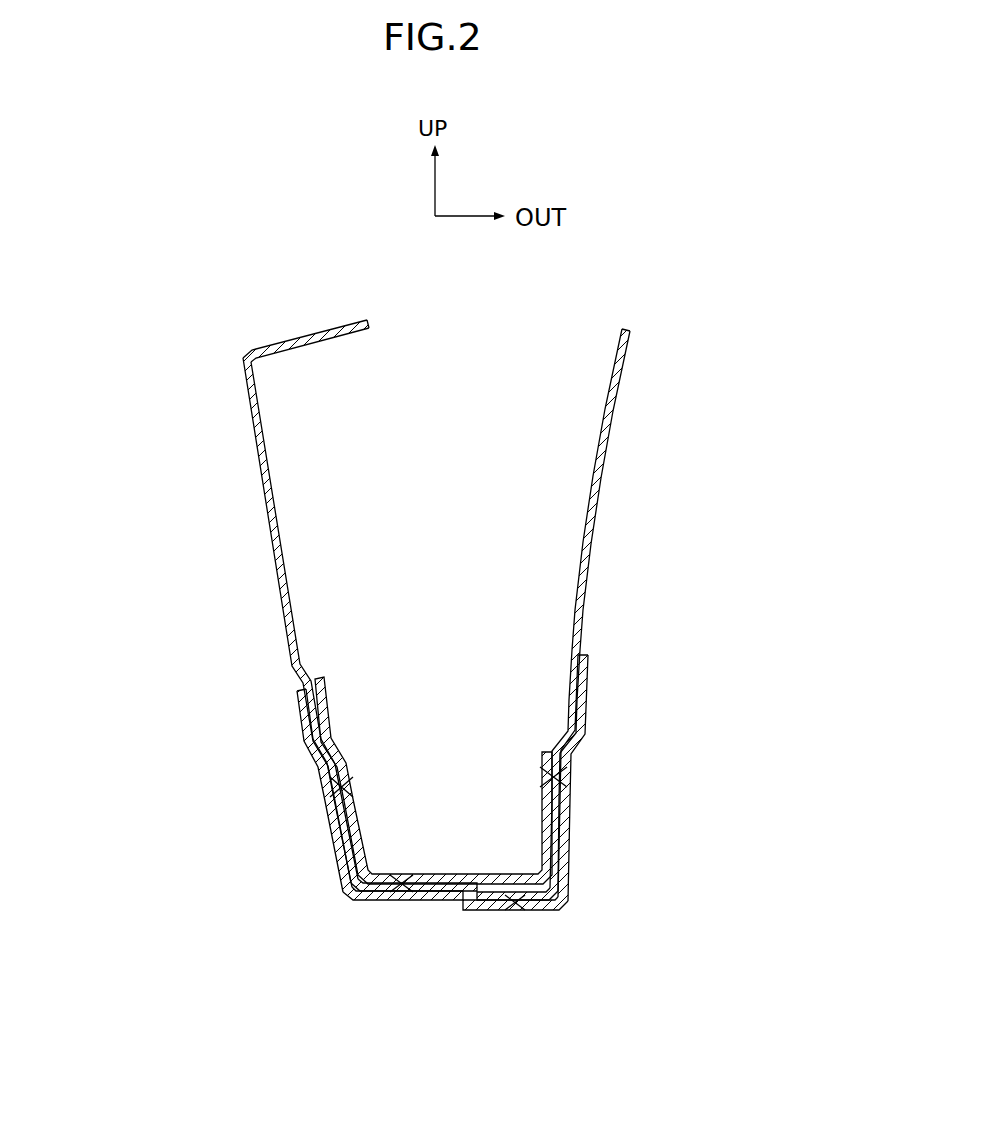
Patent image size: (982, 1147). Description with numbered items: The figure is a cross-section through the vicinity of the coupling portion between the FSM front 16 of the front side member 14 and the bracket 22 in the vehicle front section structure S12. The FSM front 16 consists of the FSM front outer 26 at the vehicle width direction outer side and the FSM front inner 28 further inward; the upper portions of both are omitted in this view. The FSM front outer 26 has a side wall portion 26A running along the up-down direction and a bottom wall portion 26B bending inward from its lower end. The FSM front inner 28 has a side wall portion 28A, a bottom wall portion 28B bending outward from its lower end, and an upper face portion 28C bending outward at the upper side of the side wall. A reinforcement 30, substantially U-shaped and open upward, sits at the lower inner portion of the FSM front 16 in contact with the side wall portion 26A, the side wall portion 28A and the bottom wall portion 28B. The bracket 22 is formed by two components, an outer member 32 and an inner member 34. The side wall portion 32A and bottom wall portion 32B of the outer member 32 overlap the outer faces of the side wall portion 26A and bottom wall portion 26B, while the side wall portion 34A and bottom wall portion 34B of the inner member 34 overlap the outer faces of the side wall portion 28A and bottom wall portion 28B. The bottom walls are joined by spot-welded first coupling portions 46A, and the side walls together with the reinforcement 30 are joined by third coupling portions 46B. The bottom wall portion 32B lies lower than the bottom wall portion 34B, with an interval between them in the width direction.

The front side member 14 is at (632, 475).
The FSM front 16 is at (433, 663).
The bracket 22 is at (454, 828).
The FSM front outer 26 is at (585, 597).
The side wall portion 26A is at (588, 556).
The bottom wall portion 26B is at (478, 912).
The FSM front inner 28 is at (283, 635).
The side wall portion 28A is at (276, 580).
The bottom wall portion 28B is at (445, 900).
The upper face portion 28C is at (306, 344).
The reinforcement 30 is at (333, 699).
The outer member 32 is at (570, 826).
The side wall portion 32A is at (572, 801).
The bottom wall portion 32B is at (532, 912).
The inner member 34 is at (330, 833).
The side wall portion 34A is at (327, 813).
The bottom wall portion 34B is at (418, 903).
The first coupling portion 46A is at (403, 899).
The third coupling portion 46B is at (325, 790).
The vehicle front section structure S12 is at (573, 952).